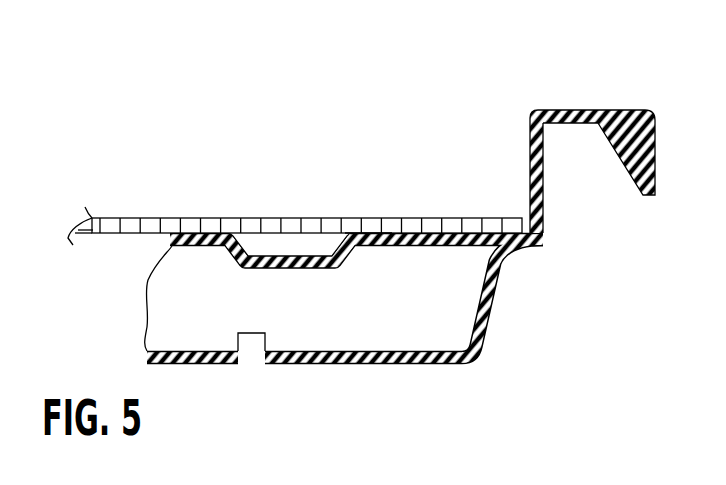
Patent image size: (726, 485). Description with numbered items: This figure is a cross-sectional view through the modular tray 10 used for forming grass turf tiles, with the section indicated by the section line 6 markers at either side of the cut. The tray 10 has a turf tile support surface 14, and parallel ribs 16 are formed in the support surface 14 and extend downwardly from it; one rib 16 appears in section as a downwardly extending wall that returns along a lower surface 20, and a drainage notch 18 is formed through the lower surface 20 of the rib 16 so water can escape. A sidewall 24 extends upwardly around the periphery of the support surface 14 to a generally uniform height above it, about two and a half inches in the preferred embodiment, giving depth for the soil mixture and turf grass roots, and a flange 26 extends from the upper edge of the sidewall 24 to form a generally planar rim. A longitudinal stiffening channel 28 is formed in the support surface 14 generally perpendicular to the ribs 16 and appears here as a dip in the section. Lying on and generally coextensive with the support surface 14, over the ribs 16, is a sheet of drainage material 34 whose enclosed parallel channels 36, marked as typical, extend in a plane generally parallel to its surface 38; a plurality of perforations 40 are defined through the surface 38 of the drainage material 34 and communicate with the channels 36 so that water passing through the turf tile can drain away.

The section line 6- 6 is at (128, 212).
The modular tray 10 is at (656, 112).
The turf tile support surface 14 is at (395, 228).
The ribs 16 is at (495, 293).
The drainage notches 18 is at (258, 340).
The lower surface 20 is at (410, 364).
The sidewalls 24 is at (528, 125).
The flanges 26 is at (567, 108).
The longitudinal stiffening channels 28 is at (275, 255).
The drainage material 34 is at (310, 240).
The enclosed parallel channels 36 is at (353, 229).
The surface of the drainage material 38 is at (178, 218).
The perforations 40 is at (215, 230).